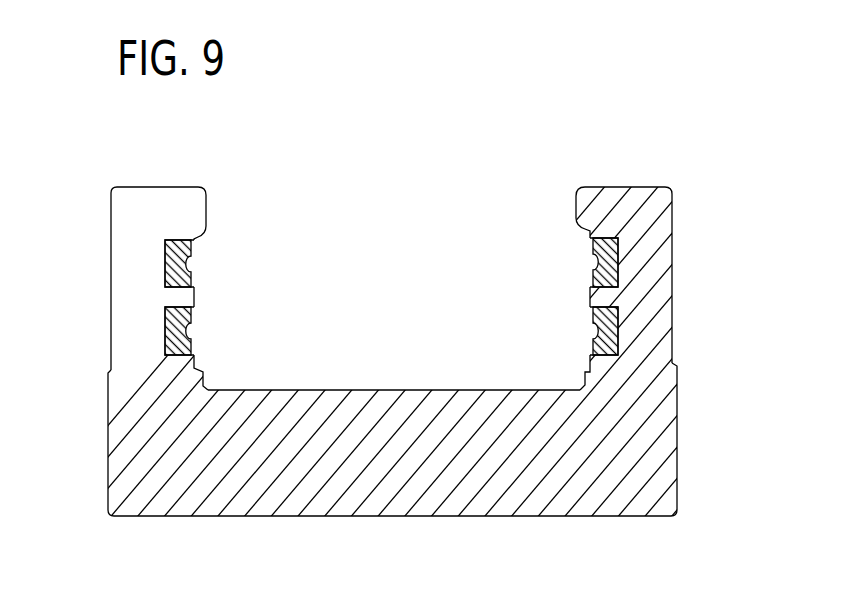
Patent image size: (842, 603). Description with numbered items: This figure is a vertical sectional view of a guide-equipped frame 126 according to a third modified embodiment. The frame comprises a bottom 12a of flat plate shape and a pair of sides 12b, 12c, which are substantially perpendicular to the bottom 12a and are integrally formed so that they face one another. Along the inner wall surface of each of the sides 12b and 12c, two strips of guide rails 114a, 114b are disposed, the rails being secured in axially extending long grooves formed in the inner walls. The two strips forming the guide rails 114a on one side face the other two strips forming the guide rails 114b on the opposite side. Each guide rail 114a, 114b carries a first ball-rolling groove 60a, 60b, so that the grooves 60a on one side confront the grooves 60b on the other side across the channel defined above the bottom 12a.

The guide-equipped frame 126 is at (675, 162).
The bottom 12a is at (387, 480).
The side 12b is at (135, 228).
The side 12c is at (648, 215).
The guide rail 114a is at (163, 270).
The guide rail 114b is at (620, 269).
The first ball-rolling groove 60a is at (188, 265).
The first ball-rolling groove 60b is at (592, 272).